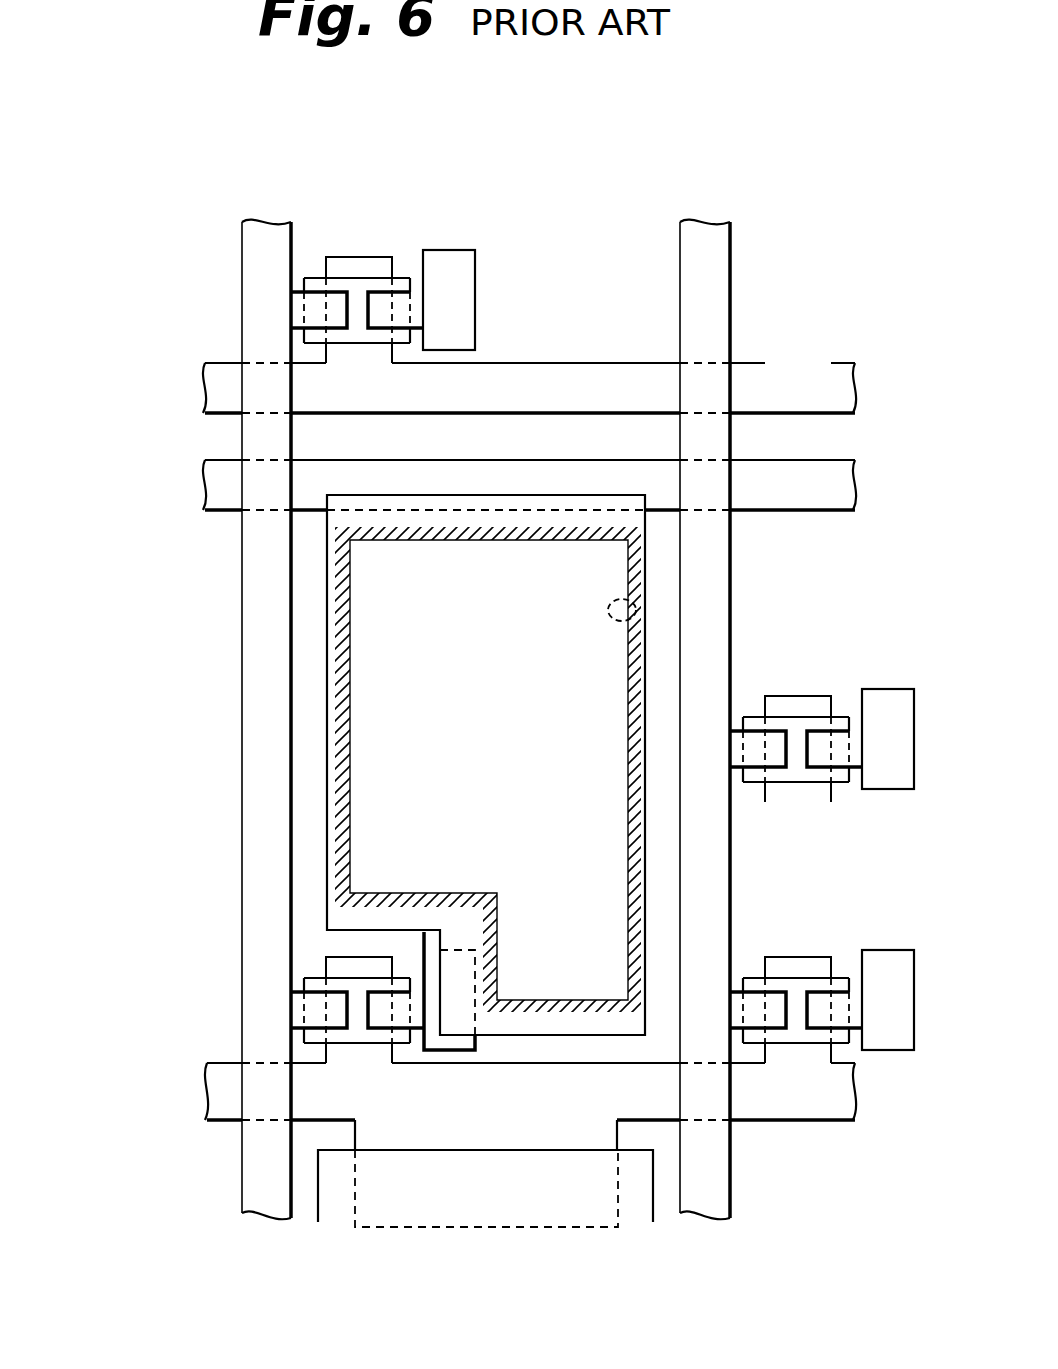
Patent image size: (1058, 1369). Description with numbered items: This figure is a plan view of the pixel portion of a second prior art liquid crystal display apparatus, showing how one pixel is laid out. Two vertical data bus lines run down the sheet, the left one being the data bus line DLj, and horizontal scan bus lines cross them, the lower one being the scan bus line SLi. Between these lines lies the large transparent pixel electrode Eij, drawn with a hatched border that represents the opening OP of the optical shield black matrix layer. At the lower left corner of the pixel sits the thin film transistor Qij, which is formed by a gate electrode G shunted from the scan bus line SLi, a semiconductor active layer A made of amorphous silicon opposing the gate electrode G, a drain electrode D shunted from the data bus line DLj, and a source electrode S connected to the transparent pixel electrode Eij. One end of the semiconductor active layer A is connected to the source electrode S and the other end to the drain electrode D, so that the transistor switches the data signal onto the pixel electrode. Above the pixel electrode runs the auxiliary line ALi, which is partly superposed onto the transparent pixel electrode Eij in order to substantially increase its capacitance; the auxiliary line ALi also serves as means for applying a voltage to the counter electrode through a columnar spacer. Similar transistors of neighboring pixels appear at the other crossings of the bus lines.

The auxiliary line ALi is at (203, 488).
The transparent pixel electrode Eij is at (647, 547).
The opening of the optical shield black matrix layer OP is at (636, 602).
The thin film transistor Qij is at (288, 905).
The source electrode S is at (425, 968).
The gate electrode G is at (356, 968).
The drain electrode D is at (317, 993).
The semiconductor active layer A is at (325, 1040).
The scan bus line SLi is at (207, 1092).
The data bus line DLj is at (265, 1195).